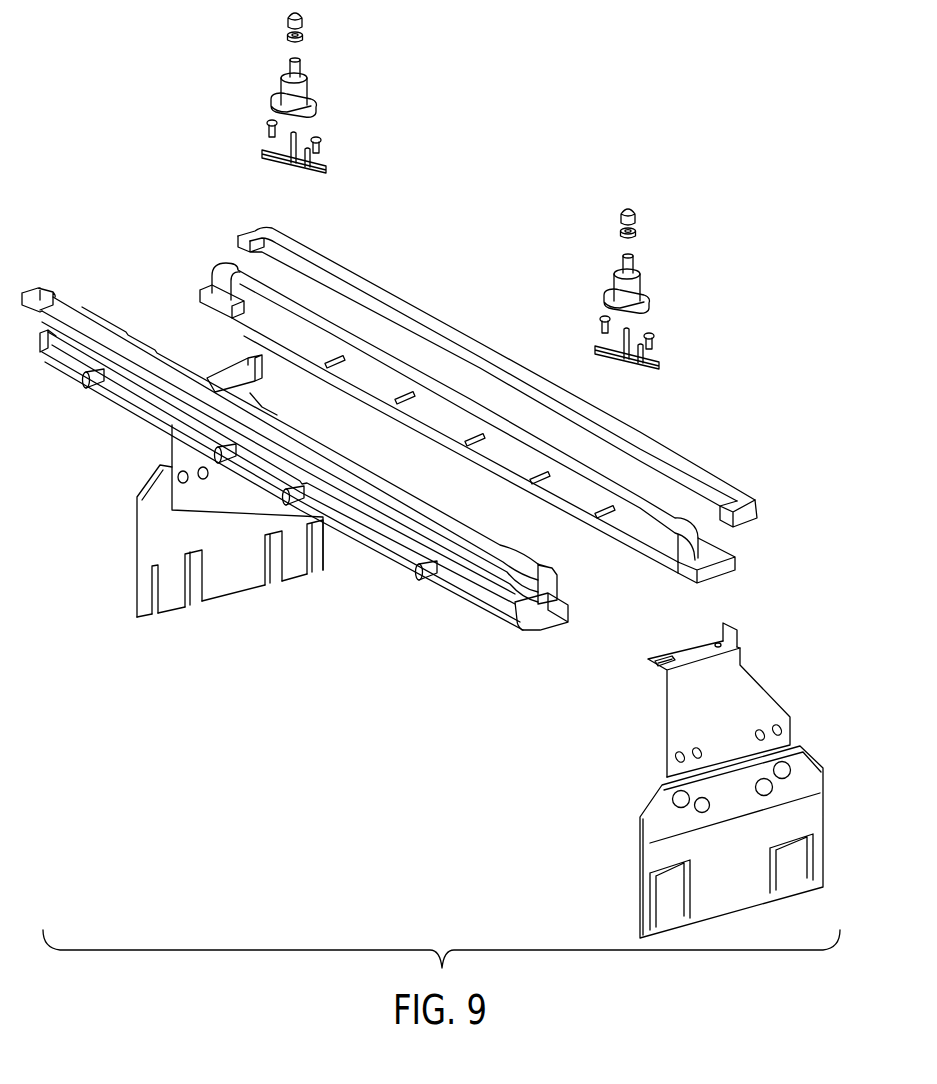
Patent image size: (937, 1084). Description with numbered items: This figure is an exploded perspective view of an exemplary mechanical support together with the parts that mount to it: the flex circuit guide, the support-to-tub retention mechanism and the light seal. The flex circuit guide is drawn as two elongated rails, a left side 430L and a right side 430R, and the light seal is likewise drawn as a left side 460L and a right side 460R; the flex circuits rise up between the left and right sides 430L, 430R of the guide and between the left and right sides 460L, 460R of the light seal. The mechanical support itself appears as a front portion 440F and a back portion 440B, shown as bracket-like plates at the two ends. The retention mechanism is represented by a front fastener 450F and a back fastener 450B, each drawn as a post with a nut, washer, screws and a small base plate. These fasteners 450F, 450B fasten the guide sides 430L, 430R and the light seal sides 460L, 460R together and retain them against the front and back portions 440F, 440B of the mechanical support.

The left side of the flex circuit guide 430L is at (388, 560).
The right side of the flex circuit guide 430R is at (491, 474).
The back portion of the mechanical support 440B is at (202, 490).
The front portion of the mechanical support 440F is at (663, 760).
The back fastener 450B is at (348, 112).
The front fastener 450F is at (668, 284).
The left side of the light seal 460L is at (96, 315).
The right side of the light seal 460R is at (436, 312).